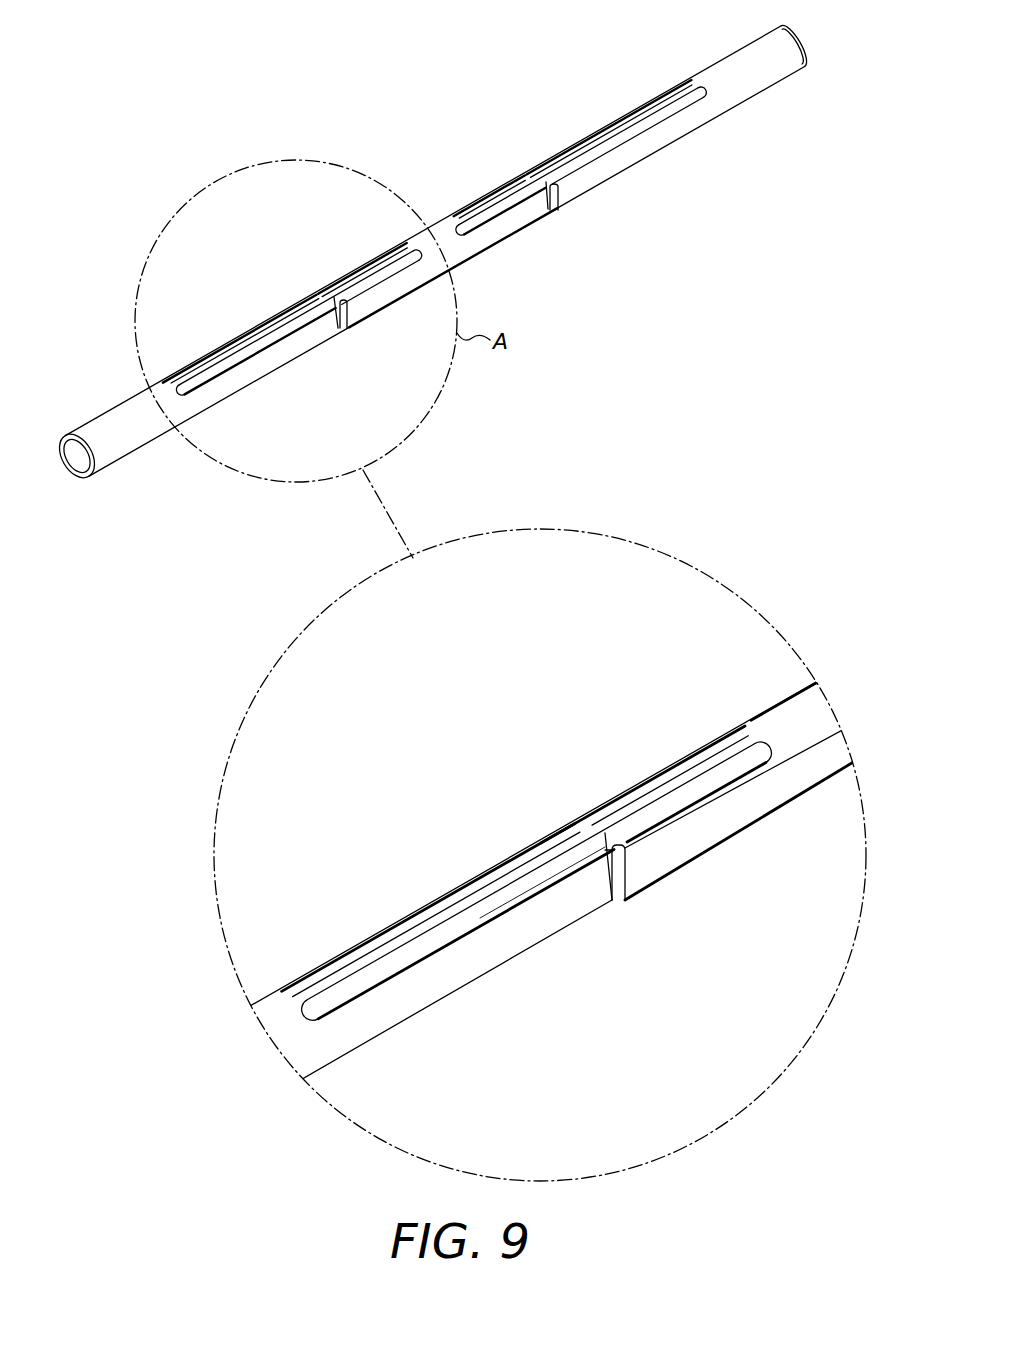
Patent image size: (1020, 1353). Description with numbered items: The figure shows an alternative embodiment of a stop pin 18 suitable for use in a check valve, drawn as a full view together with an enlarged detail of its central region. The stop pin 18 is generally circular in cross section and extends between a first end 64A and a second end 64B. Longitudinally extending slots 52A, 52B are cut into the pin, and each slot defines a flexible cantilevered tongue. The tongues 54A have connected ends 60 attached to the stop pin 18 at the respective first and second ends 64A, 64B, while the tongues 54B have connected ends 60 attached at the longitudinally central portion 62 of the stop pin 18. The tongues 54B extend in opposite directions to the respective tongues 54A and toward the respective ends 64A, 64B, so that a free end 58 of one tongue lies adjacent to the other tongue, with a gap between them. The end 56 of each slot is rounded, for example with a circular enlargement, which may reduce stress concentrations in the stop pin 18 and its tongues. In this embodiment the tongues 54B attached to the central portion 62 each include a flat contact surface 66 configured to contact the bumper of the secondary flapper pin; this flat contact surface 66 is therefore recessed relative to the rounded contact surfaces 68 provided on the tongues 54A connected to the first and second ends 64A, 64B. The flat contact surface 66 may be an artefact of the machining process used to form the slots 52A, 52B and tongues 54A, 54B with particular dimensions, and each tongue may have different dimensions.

The stop pin 18 is at (576, 66).
The slot 52A is at (478, 907).
The slot 52B is at (680, 790).
The flexible cantilevered tongue 54A is at (450, 985).
The flexible cantilevered tongue 54B is at (732, 818).
The slot end 56 is at (750, 730).
The free end 58 is at (612, 905).
The connected end 60 is at (775, 790).
The longitudinally central portion 62 is at (438, 228).
The first end 64A is at (793, 57).
The second end 64B is at (98, 420).
The flat contact surface 66 is at (680, 848).
The rounded contact surface 68 is at (543, 928).